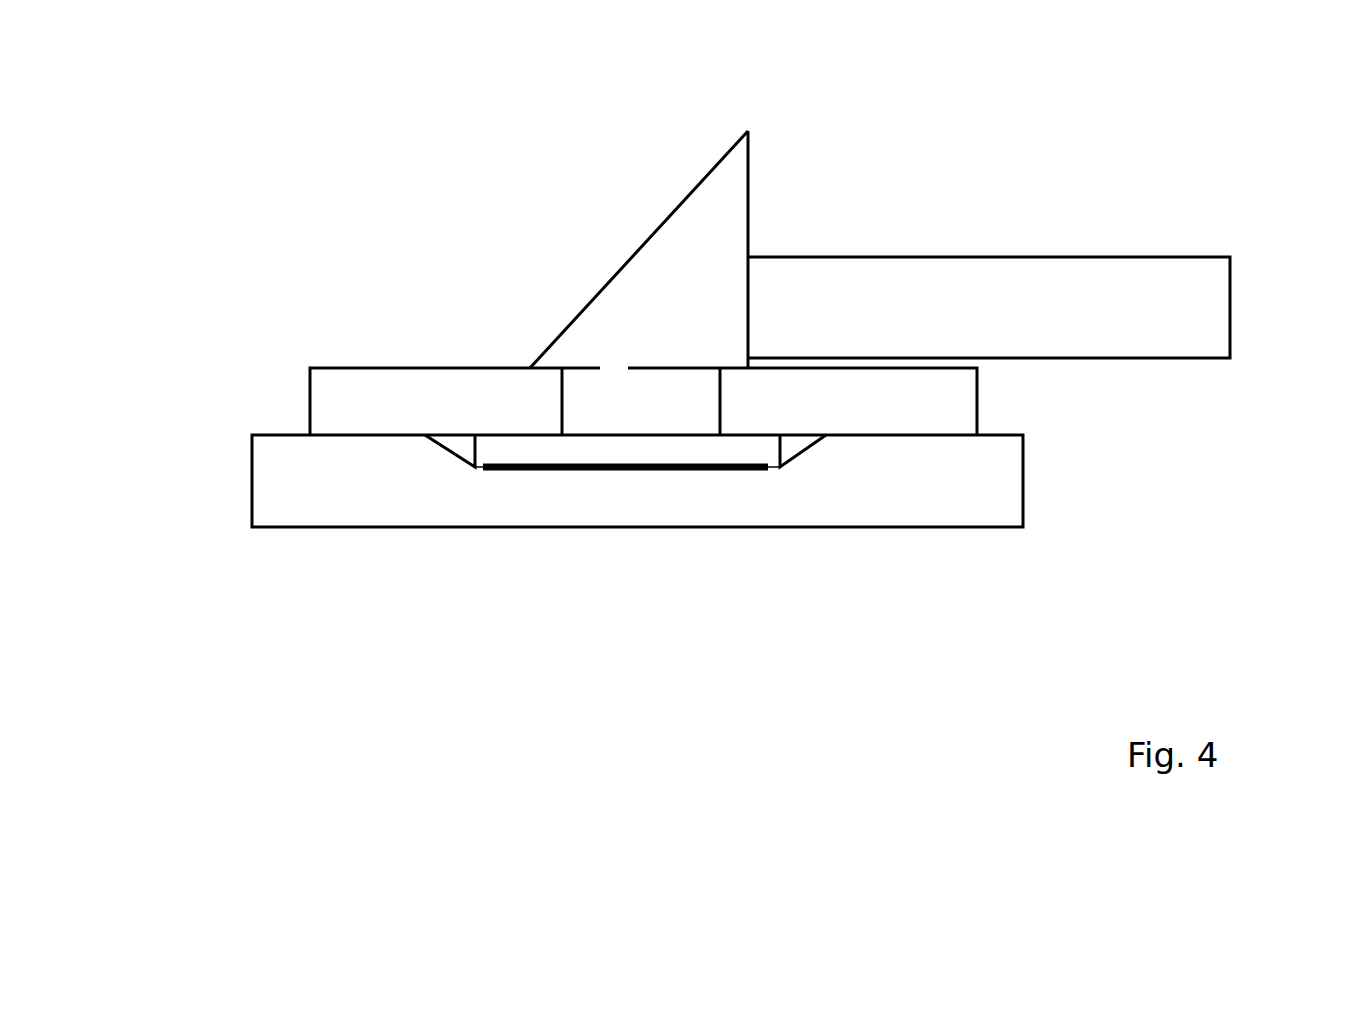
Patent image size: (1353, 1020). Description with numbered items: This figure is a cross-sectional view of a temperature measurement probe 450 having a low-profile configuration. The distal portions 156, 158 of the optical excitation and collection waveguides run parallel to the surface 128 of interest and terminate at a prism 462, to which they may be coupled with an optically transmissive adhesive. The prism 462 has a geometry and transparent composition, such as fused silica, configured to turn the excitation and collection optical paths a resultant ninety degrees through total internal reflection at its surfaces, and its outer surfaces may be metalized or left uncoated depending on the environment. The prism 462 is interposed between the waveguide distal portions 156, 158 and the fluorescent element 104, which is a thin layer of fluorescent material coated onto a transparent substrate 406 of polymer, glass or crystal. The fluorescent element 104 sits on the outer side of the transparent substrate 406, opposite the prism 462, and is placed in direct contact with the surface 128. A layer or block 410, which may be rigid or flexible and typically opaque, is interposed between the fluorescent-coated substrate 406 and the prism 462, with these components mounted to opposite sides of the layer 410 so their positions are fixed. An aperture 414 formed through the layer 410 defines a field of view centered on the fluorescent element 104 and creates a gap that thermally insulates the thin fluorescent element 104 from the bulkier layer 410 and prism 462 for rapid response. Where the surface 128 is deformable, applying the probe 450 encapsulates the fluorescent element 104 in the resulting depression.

The temperature measurement probe 450 is at (226, 168).
The surface of interest 128 is at (272, 432).
The fluorescent element 104 is at (487, 472).
The layer or block 410 is at (360, 367).
The transparent substrate 406 is at (597, 435).
The aperture 414 is at (628, 385).
The prism 462 is at (695, 187).
The distal portion of optical excitation waveguide 156 is at (1128, 255).
The distal portion of optical collection waveguide 158 is at (989, 307).